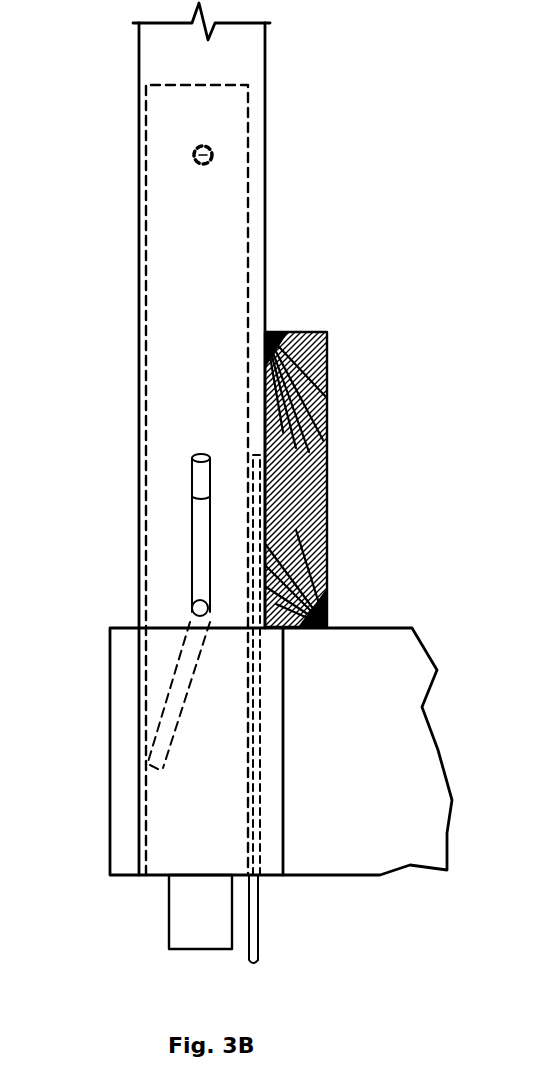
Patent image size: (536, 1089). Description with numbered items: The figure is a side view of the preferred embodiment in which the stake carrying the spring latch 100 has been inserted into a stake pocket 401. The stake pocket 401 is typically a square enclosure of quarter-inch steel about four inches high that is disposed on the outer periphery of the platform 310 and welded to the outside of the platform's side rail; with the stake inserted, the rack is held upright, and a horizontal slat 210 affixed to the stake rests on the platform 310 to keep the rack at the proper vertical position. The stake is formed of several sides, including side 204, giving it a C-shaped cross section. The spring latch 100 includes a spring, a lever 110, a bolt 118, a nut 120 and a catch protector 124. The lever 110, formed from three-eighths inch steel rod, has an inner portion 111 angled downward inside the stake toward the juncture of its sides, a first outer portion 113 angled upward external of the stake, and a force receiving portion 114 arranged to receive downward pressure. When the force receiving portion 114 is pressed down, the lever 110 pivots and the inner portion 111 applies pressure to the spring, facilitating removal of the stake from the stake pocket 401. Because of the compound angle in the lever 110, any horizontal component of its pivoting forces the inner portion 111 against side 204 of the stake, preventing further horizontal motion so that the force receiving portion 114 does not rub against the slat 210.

The spring latch 100 is at (247, 290).
The lever 110 is at (228, 565).
The inner portion 111 is at (173, 695).
The first outer portion 113 is at (203, 530).
The force receiving portion 114 is at (205, 490).
The bolt 118 is at (212, 152).
The nut 120 is at (212, 157).
The catch protector 124 is at (253, 737).
The side 204 is at (139, 45).
The horizontal slat 210 is at (327, 385).
The platform 310 is at (388, 652).
The stake pocket 401 is at (123, 670).